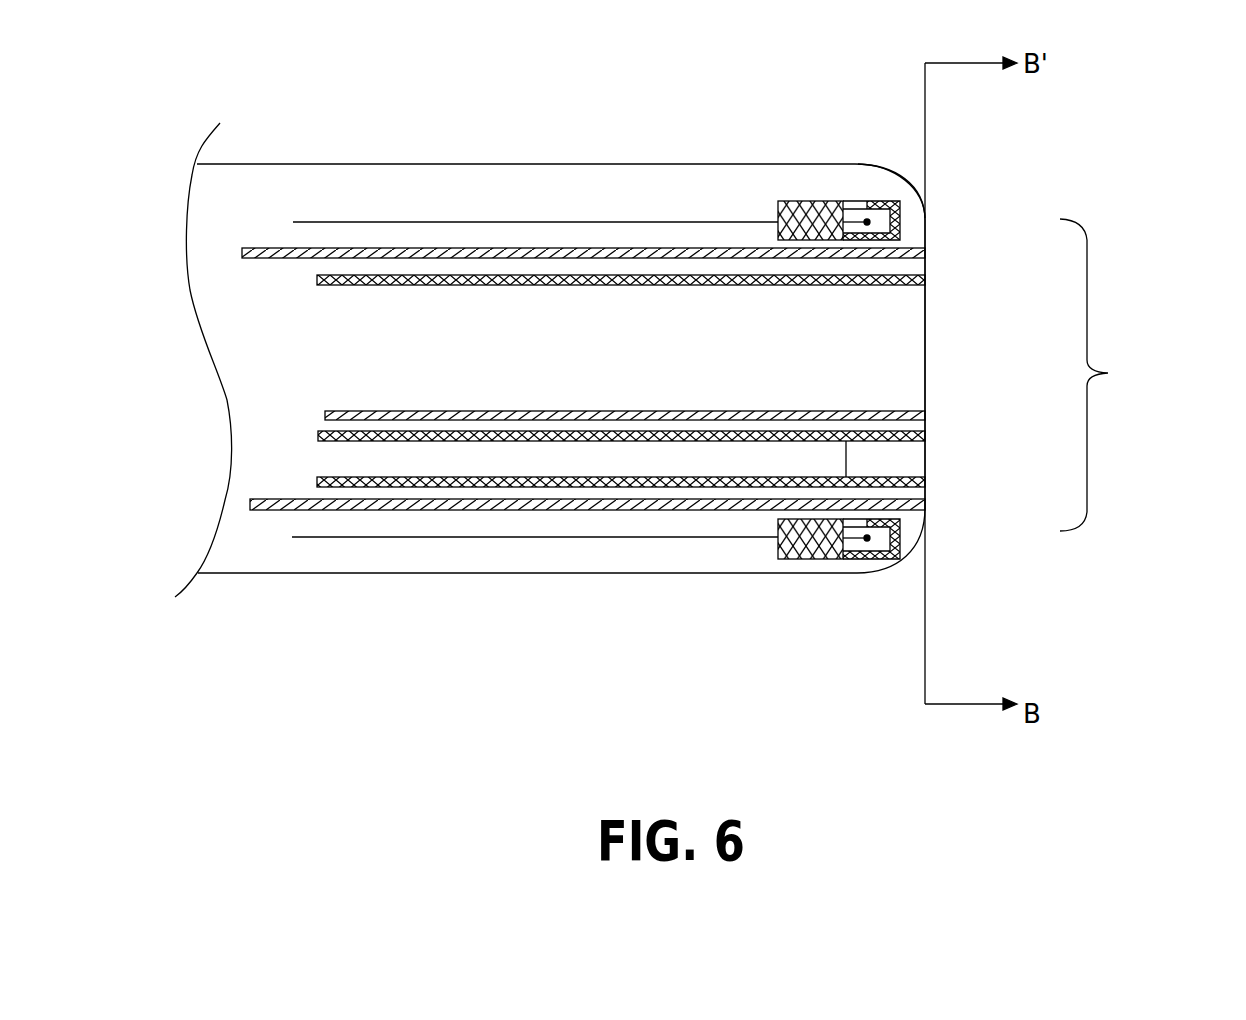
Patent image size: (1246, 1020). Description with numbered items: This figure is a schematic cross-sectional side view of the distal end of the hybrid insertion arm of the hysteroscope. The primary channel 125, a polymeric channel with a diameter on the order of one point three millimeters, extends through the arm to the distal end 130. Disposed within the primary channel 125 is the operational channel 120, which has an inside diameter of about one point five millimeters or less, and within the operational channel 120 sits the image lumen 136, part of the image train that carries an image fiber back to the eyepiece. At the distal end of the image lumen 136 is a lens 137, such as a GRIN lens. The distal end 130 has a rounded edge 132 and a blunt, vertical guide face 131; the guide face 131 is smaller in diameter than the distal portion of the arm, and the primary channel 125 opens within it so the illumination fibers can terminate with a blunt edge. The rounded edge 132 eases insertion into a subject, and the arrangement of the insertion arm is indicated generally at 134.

The operational channel 120 is at (717, 275).
The primary channel 125 is at (652, 247).
The distal end 130 is at (926, 386).
The guide face 131 is at (1107, 375).
The rounded edge 132 is at (934, 203).
The battery 134 is at (975, 325).
The image lumen 136 is at (736, 490).
The lens 137 is at (883, 463).